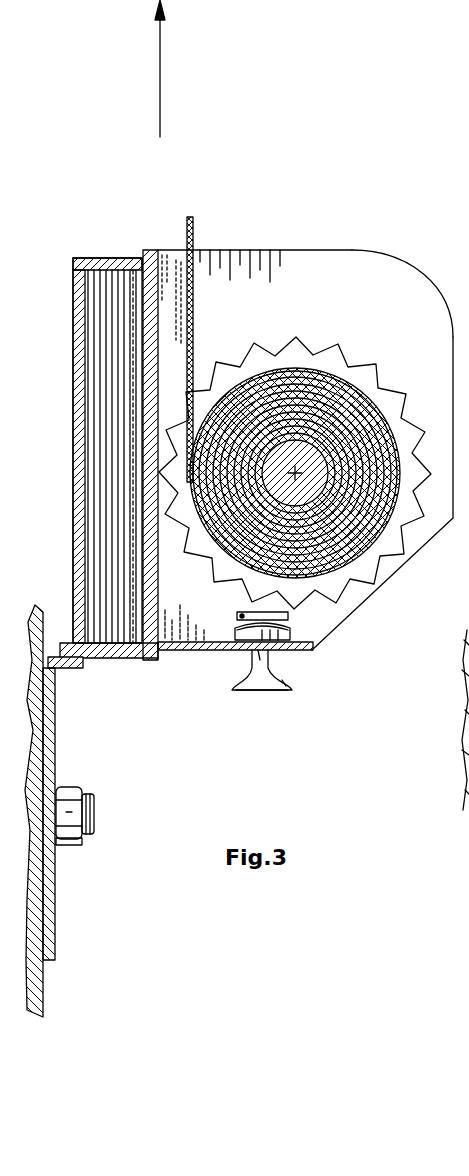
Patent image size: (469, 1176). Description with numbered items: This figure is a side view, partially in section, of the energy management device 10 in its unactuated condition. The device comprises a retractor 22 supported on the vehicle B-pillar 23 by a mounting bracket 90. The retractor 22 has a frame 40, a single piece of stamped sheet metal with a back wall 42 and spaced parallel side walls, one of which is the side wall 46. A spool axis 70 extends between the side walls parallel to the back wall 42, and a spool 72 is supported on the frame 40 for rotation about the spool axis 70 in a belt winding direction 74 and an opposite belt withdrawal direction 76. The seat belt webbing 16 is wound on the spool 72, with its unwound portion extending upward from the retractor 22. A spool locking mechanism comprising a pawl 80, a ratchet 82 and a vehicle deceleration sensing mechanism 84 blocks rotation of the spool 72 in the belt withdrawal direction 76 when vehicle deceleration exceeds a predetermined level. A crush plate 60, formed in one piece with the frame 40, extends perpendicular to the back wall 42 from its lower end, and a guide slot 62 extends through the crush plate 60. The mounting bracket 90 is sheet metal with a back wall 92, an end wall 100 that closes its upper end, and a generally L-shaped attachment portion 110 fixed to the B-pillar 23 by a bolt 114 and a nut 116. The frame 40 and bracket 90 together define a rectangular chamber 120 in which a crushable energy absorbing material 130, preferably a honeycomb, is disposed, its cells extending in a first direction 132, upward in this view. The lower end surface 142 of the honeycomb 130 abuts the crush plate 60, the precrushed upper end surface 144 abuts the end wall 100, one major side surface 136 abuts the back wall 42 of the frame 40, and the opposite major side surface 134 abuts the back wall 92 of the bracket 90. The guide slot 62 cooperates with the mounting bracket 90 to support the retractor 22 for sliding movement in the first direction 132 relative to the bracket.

The energy management device 10 is at (250, 730).
The seat belt webbing 16 is at (193, 218).
The retractor 22 is at (358, 238).
The vehicle B-pillar 23 is at (45, 990).
The frame 40 is at (305, 406).
The back wall 42 is at (150, 250).
The side wall 46 is at (425, 285).
The crush plate 60 is at (110, 658).
The guide slot 62 is at (140, 655).
The spool axis 70 is at (300, 465).
The spool 72 is at (358, 555).
The belt winding direction 74 is at (293, 305).
The belt withdrawal direction 76 is at (429, 393).
The pawl 80 is at (290, 616).
The ratchet 82 is at (292, 348).
The vehicle deceleration sensing mechanism 84 is at (292, 682).
The mounting bracket 90 is at (73, 563).
The back wall 92 is at (73, 393).
The end wall 100 is at (82, 401).
The attachment portion 110 is at (57, 935).
The bolt 114 is at (94, 815).
The nut 116 is at (68, 842).
The chamber 120 is at (110, 445).
The crushable energy absorbing material 130 is at (100, 474).
The first direction 132 is at (160, 70).
The major side surface 134 is at (85, 333).
The major side surface 136 is at (144, 594).
The lower end surface 142 is at (97, 658).
The upper end surface 144 is at (95, 268).